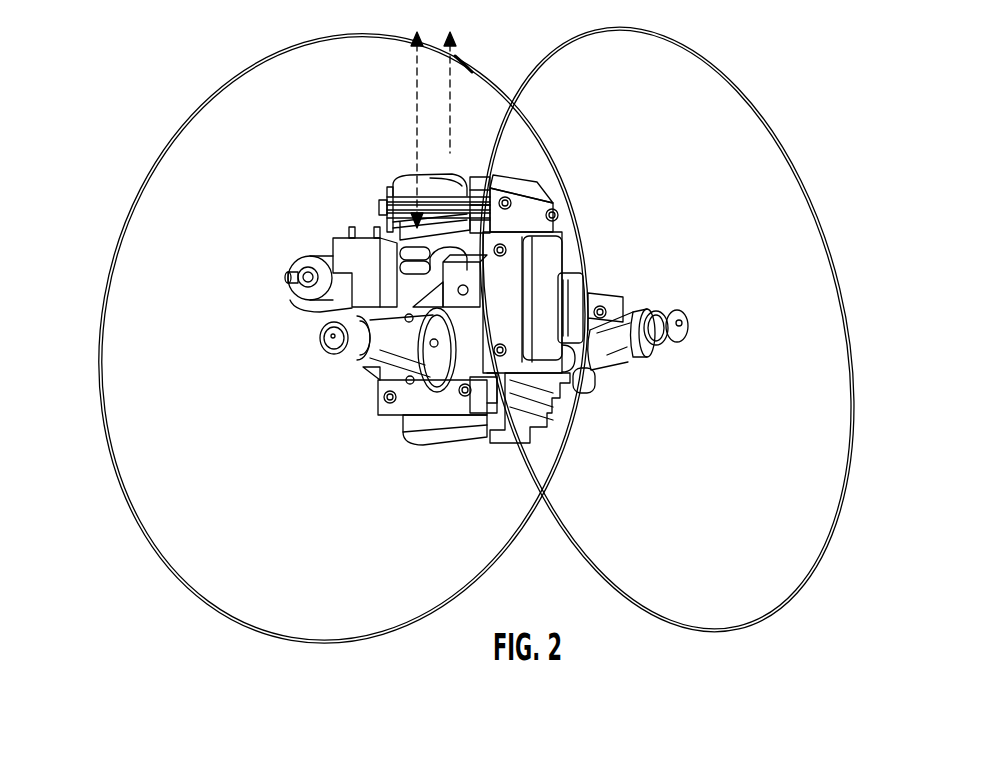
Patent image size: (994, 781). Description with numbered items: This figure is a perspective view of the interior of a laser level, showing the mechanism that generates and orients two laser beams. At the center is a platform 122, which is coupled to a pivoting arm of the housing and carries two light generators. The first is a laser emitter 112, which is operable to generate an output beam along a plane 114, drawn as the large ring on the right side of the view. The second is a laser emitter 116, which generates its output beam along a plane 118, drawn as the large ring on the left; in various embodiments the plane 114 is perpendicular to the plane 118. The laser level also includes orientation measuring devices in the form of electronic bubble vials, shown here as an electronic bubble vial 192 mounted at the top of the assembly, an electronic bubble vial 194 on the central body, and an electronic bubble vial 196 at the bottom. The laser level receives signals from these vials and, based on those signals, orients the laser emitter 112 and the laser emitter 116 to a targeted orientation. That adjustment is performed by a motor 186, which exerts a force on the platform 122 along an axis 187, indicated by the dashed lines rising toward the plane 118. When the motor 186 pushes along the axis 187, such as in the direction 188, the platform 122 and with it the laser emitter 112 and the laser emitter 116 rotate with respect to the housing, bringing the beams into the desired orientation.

The laser emitter 112 is at (654, 330).
The plane 114 is at (803, 157).
The laser emitter 116 is at (336, 361).
The plane 118 is at (122, 185).
The platform 122 is at (413, 294).
The motor 186 is at (377, 261).
The axis 187 is at (394, 91).
The direction 188 is at (467, 64).
The electronic bubble vial 192 is at (519, 171).
The electronic bubble vial 194 is at (546, 267).
The electronic bubble vial 196 is at (487, 449).